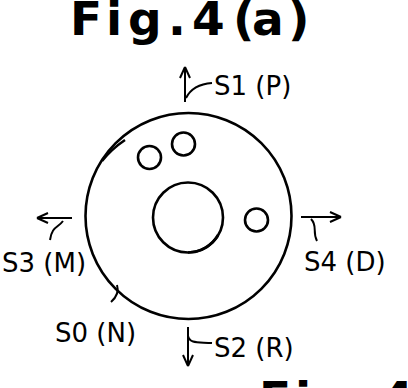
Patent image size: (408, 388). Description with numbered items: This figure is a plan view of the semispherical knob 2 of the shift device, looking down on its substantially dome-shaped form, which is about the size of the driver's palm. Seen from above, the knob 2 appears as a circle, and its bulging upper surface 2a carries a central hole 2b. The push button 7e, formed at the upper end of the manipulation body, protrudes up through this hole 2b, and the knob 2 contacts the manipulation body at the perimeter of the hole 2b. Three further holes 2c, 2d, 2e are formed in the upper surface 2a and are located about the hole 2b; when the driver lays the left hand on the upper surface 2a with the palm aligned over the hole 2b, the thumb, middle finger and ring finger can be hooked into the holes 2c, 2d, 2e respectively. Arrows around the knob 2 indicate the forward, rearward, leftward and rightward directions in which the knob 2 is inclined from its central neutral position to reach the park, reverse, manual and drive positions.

The semispherical knob 2 is at (265, 128).
The upper surface 2a is at (102, 161).
The hole 2b is at (158, 236).
The hole 2c is at (257, 214).
The hole 2d is at (176, 140).
The hole 2e is at (143, 150).
The push button 7e is at (199, 242).